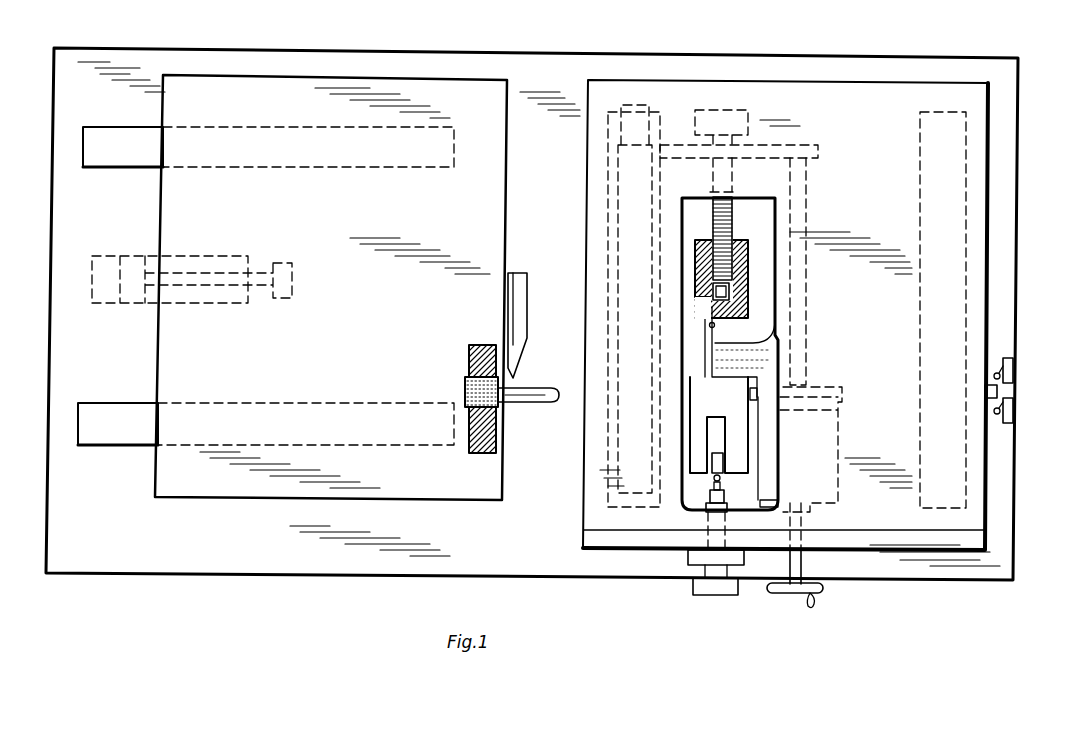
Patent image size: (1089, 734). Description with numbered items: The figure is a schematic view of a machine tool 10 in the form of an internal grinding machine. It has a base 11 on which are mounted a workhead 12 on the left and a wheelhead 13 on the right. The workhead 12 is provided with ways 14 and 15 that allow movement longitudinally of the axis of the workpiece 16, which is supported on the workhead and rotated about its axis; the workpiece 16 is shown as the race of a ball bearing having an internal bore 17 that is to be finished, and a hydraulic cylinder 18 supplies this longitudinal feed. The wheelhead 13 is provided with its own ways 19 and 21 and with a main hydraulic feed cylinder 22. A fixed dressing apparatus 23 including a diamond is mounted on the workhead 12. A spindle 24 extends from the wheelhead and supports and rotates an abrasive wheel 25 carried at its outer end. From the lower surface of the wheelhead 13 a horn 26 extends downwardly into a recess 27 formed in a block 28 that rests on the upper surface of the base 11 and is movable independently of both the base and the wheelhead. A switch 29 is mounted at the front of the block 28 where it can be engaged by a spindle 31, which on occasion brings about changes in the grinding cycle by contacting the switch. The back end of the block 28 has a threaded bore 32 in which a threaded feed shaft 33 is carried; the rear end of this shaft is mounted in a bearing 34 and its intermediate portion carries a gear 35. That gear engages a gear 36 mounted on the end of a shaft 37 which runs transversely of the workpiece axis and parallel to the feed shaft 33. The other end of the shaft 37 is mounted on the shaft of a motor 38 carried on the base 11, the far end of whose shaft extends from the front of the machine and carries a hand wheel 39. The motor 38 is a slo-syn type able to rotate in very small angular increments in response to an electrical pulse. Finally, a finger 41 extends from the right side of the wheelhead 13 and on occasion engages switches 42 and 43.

The machine tool 10 is at (806, 56).
The base 11 is at (466, 52).
The workhead 12 is at (268, 77).
The wheelhead 13 is at (906, 82).
The way 14 is at (118, 166).
The way 15 is at (118, 403).
The workpiece 16 is at (480, 345).
The internal bore 17 is at (493, 422).
The hydraulic cylinder 18 is at (125, 304).
The way 19 is at (946, 111).
The way 21 is at (641, 103).
The main hydraulic feed cylinder 22 is at (607, 203).
The fixed dressing apparatus 23 is at (520, 324).
The spindle 24 is at (546, 404).
The abrasive wheel 25 is at (467, 390).
The horn 26 is at (722, 358).
The recess 27 is at (712, 337).
The block 28 is at (740, 300).
The switch 29 is at (720, 464).
The spindle 31 is at (712, 503).
The threaded bore 32 is at (716, 292).
The threaded feed shaft 33 is at (713, 224).
The bearing 34 is at (741, 114).
The gear 35 is at (701, 175).
The gear 36 is at (808, 150).
The shaft 37 is at (808, 192).
The motor 38 is at (838, 422).
The hand wheel 39 is at (818, 602).
The finger 41 is at (985, 392).
The switch 42 is at (1013, 372).
The switch 43 is at (1013, 410).